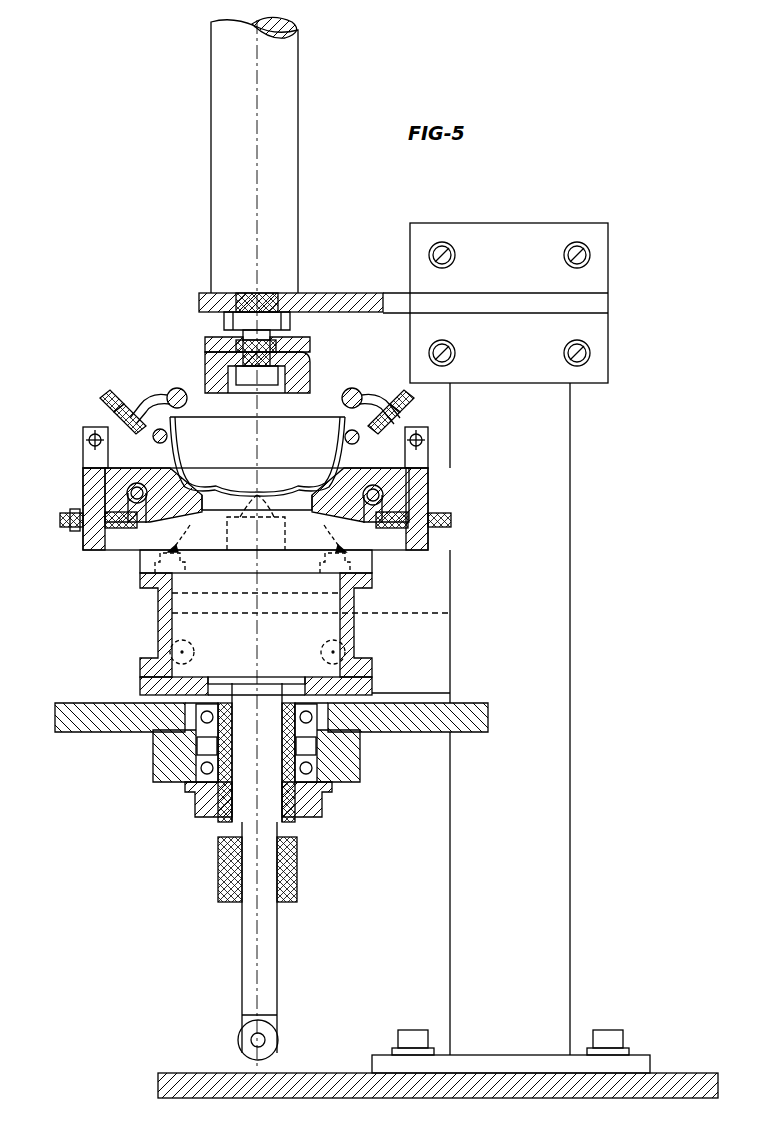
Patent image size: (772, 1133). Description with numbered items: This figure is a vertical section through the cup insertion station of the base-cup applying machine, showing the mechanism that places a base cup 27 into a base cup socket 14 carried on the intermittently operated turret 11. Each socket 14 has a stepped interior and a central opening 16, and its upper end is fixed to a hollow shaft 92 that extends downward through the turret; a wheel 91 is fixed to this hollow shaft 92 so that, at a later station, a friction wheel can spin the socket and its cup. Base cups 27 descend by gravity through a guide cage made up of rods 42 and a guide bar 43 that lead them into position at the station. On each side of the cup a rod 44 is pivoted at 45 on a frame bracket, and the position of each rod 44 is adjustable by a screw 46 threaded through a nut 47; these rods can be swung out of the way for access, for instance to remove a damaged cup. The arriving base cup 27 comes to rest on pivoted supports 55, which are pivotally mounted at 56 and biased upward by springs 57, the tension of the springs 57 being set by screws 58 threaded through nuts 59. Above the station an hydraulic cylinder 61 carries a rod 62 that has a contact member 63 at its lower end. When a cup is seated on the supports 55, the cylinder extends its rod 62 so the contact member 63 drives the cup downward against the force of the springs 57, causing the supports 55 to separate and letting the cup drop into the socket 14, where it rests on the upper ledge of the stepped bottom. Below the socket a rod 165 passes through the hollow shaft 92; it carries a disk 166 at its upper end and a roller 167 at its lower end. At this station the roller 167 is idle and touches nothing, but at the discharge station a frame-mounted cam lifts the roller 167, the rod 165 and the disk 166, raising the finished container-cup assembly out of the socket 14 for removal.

The turret 11 is at (95, 721).
The base cup socket 14 is at (158, 627).
The central opening 16 is at (160, 598).
The base cup 27 is at (292, 418).
The rod 42 is at (174, 444).
The guide bar 43 is at (258, 482).
The rod 44 is at (170, 392).
The pivot 45 is at (88, 440).
The screw 46 is at (106, 400).
The nut 47 is at (126, 412).
The pivoted support 55 is at (115, 484).
The pivot 56 is at (128, 490).
The spring 57 is at (140, 528).
The screw 58 is at (64, 520).
The nut 59 is at (78, 530).
The hydraulic cylinder 61 is at (213, 178).
The rod 62 is at (264, 318).
The contact member 63 is at (300, 372).
The wheel 91 is at (326, 800).
The hollow shaft 92 is at (222, 800).
The rod 165 is at (248, 950).
The disk 166 is at (268, 677).
The roller 167 is at (280, 1040).